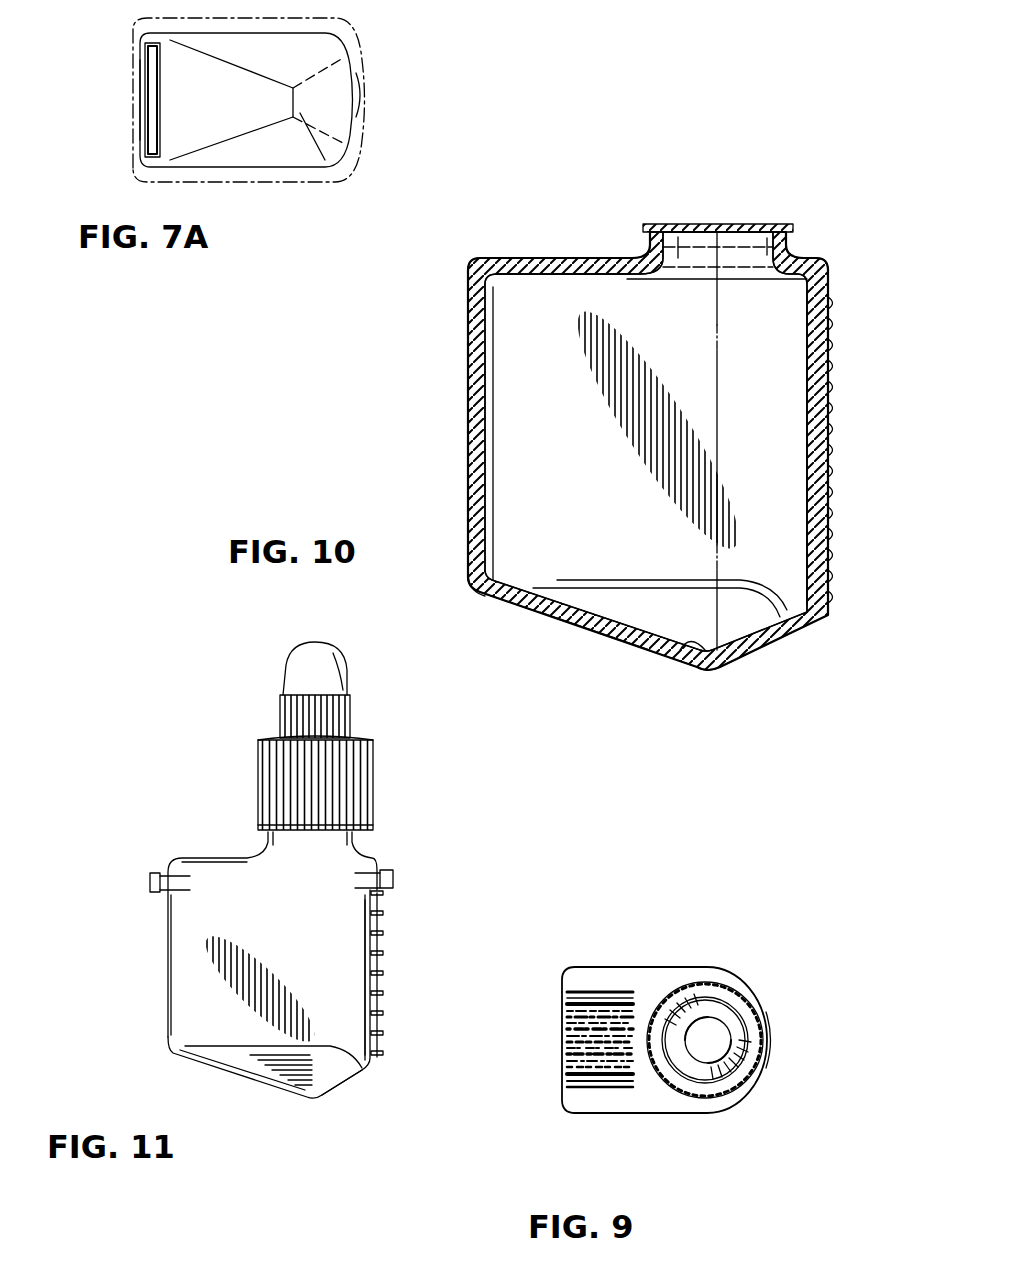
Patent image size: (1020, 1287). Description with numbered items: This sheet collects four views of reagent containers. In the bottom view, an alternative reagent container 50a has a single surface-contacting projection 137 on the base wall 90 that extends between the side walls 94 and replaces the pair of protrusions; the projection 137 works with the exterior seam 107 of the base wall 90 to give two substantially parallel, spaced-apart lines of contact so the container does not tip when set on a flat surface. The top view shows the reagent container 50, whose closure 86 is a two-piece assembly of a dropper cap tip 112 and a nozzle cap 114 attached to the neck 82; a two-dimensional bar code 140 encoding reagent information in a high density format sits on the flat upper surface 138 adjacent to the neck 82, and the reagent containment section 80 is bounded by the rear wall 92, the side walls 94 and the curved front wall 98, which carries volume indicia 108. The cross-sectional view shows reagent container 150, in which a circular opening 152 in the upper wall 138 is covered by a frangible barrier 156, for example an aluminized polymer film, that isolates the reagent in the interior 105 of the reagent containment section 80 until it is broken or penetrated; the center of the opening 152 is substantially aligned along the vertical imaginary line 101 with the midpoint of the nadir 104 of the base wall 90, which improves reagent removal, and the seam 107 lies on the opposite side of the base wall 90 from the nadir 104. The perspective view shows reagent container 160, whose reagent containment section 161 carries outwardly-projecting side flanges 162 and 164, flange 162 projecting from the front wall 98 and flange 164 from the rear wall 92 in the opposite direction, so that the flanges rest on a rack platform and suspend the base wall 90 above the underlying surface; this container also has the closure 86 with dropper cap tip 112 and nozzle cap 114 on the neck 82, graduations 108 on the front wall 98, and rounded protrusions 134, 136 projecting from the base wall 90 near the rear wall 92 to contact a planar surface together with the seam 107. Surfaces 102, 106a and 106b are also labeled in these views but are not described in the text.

In FIG. 9, the reagent container 50 is at (767, 963).
In FIG. 7A, the reagent container (alternative embodiment) 50a is at (400, 113).
In FIG. 7A, the reagent containment section 80 is at (322, 26).
In FIG. 10, the reagent containment section 80 is at (464, 397).
In FIG. 9, the reagent containment section 80 is at (690, 965).
In FIG. 11, the hollow neck 82 is at (356, 840).
In FIG. 11, the closure 86 is at (215, 757).
In FIG. 9, the closure 86 is at (675, 1103).
In FIG. 7A, the base wall 90 is at (292, 142).
In FIG. 10, the base wall 90 is at (612, 648).
In FIG. 11, the base wall 90 is at (352, 1080).
In FIG. 7A, the rear wall 92 is at (135, 120).
In FIG. 10, the rear wall 92 is at (468, 333).
In FIG. 11, the side wall 94 is at (330, 970).
In FIG. 10, the curved front wall 98 is at (833, 393).
In FIG. 11, the curved front wall 98 is at (382, 986).
In FIG. 10, the vertical imaginary line 101 is at (719, 308).
In FIG. 10, the bottom interior surface 102 is at (700, 630).
In FIG. 10, the nadir 104 is at (683, 652).
In FIG. 10, the internal reagent chamber 105 is at (595, 490).
In FIG. 9, the lower side face 106a is at (622, 1115).
In FIG. 9, the upper side face 106b is at (650, 967).
In FIG. 7A, the exterior seam 107 is at (290, 100).
In FIG. 10, the exterior seam 107 is at (712, 668).
In FIG. 10, the volume indicia 108 is at (832, 475).
In FIG. 11, the volume indicia 108 is at (383, 946).
In FIG. 9, the volume indicia 108 is at (770, 1027).
In FIG. 11, the dropper cap tip 112 is at (255, 815).
In FIG. 9, the dropper cap tip 112 is at (748, 1073).
In FIG. 11, the nozzle cap 114 is at (281, 675).
In FIG. 9, the nozzle cap 114 is at (712, 1078).
In FIG. 11, the protrusion 134 is at (178, 1058).
In FIG. 10, the protrusion 136 is at (487, 597).
In FIG. 7A, the surface-contacting projection 137 is at (145, 70).
In FIG. 10, the flat upper surface 138 is at (508, 258).
In FIG. 11, the flat upper surface 138 is at (222, 855).
In FIG. 9, the flat upper surface 138 is at (580, 978).
In FIG. 9, the two-dimensional bar code 140 is at (598, 1088).
In FIG. 10, the reagent container 150 is at (385, 479).
In FIG. 10, the circular opening 152 is at (758, 255).
In FIG. 10, the frangible barrier 156 is at (692, 224).
In FIG. 11, the reagent container 160 is at (112, 1010).
In FIG. 11, the reagent containment section 161 is at (163, 945).
In FIG. 11, the side flange 162 is at (395, 878).
In FIG. 11, the side flange 164 is at (150, 880).